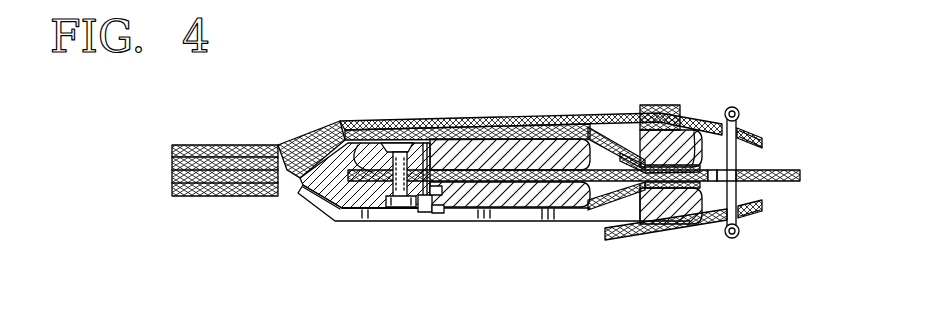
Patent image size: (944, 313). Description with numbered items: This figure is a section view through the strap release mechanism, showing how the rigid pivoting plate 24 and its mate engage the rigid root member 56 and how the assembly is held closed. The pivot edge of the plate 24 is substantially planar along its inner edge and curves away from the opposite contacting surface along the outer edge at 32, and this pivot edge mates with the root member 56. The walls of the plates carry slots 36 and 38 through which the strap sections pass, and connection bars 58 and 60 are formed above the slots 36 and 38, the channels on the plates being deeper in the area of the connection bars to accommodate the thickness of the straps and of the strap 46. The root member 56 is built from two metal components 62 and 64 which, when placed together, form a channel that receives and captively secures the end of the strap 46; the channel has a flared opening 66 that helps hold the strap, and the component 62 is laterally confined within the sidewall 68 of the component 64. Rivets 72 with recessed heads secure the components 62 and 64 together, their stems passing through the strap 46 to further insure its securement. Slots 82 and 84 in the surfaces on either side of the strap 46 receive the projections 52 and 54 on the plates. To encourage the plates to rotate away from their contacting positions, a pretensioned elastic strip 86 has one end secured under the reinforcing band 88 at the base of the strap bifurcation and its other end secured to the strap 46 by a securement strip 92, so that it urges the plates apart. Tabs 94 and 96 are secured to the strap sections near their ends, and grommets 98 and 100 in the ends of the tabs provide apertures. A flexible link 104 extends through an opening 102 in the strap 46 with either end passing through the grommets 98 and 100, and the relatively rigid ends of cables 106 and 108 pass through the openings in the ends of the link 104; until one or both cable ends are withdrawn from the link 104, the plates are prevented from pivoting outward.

The plate 24 is at (540, 228).
The curved outer edge 32 is at (436, 206).
The slot 36 is at (612, 212).
The slot 38 is at (605, 136).
The strap 46 is at (778, 171).
The projection 52 is at (432, 190).
The projection 54 is at (447, 136).
The root member 56 is at (368, 228).
The connection bar 58 is at (692, 216).
The connection bar 60 is at (675, 140).
The metal component 62 is at (380, 150).
The metal component 64 is at (316, 178).
The flared opening 66 is at (355, 137).
The sidewall 68 is at (318, 213).
The rivet 72 is at (398, 200).
The slot 82 is at (420, 212).
The slot 84 is at (424, 146).
The elastic strip 86 is at (518, 117).
The reinforcing band 88 is at (232, 143).
The securement strip 92 is at (660, 104).
The tab 94 is at (766, 207).
The tab 96 is at (766, 145).
The grommet 98 is at (763, 220).
The grommet 100 is at (760, 134).
The opening 102 is at (742, 187).
The flexible link 104 is at (746, 126).
The cable 106 is at (738, 239).
The cable 108 is at (729, 108).